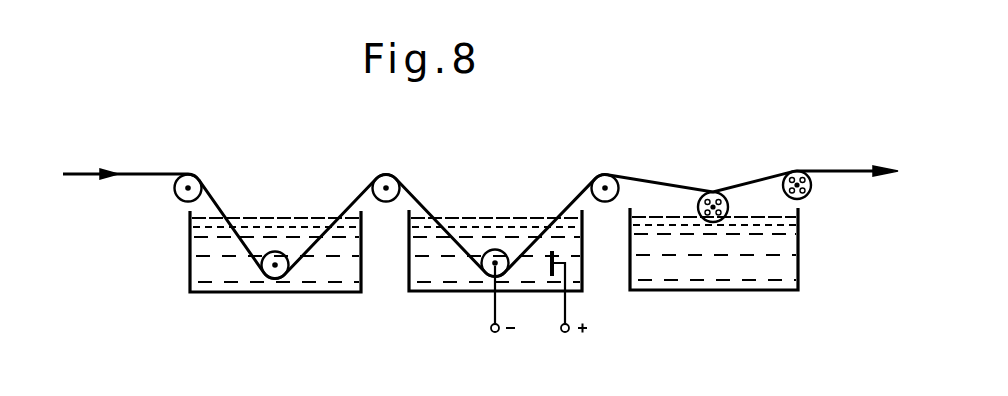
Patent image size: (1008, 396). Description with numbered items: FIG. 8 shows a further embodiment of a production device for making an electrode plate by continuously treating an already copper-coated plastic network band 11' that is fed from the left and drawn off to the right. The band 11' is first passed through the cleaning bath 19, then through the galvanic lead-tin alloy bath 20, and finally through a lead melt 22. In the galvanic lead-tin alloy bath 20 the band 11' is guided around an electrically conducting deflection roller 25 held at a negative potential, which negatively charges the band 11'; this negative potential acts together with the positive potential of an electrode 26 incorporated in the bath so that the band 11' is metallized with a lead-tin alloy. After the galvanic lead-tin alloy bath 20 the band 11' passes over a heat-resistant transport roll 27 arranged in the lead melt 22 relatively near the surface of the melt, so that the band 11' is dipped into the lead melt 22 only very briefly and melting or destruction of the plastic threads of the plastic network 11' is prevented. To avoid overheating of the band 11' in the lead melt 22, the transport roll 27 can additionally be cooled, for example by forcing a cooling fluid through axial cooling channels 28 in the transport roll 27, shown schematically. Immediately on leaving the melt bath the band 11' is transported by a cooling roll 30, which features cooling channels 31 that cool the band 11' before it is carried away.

The copper-coated plastic network band 11' is at (480, 190).
The cleaning bath 19 is at (227, 268).
The galvanic lead-tin alloy bath 20 is at (448, 268).
The lead melt 22 is at (665, 262).
The electrically conducting deflection roller 25 is at (493, 257).
The electrode 26 is at (551, 262).
The heat-resistant transport roll 27 is at (705, 202).
The axial cooling channels 28 is at (732, 155).
The cooling roll 30 is at (797, 170).
The cooling channels 31 is at (811, 188).